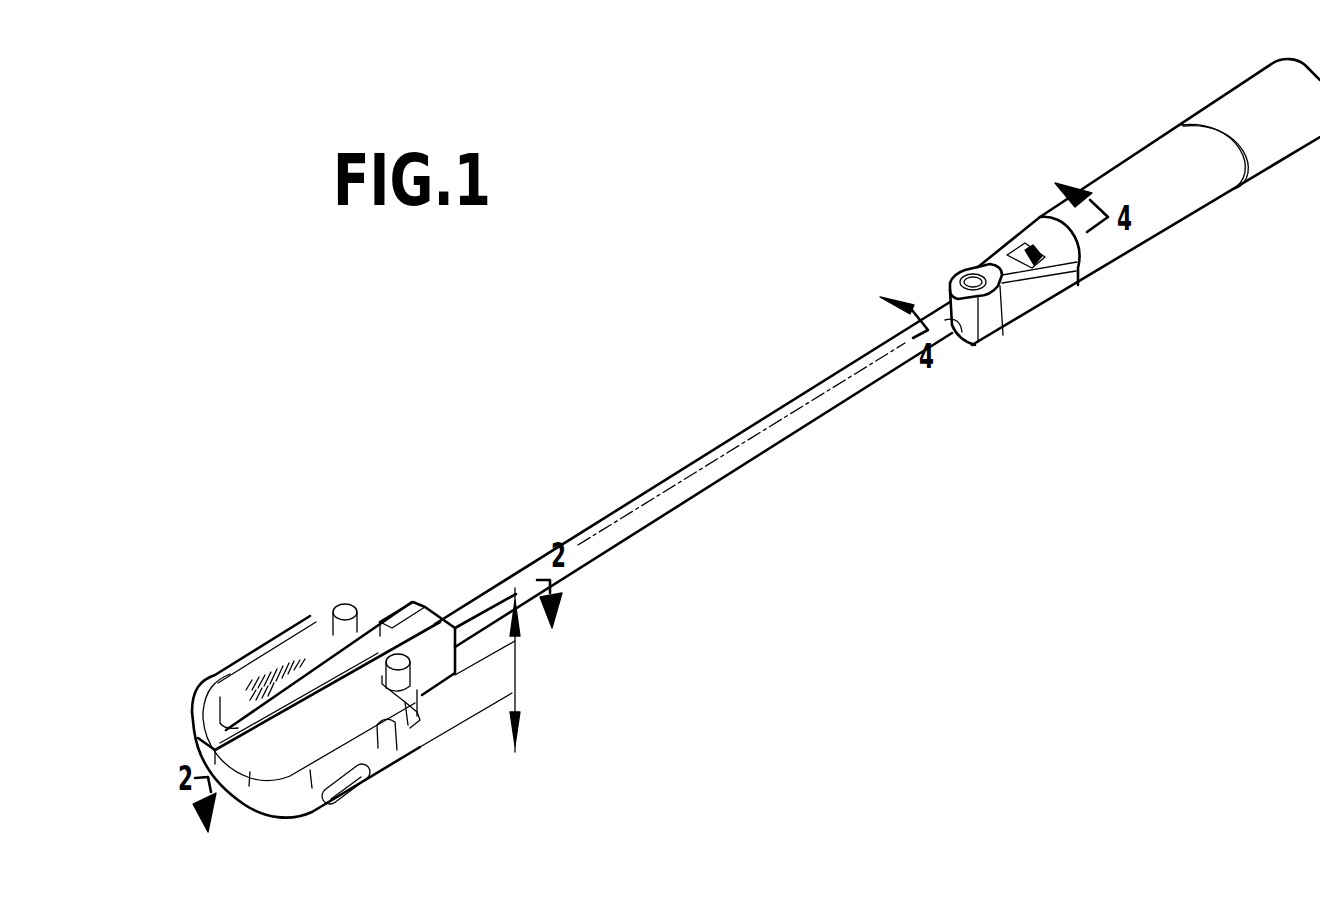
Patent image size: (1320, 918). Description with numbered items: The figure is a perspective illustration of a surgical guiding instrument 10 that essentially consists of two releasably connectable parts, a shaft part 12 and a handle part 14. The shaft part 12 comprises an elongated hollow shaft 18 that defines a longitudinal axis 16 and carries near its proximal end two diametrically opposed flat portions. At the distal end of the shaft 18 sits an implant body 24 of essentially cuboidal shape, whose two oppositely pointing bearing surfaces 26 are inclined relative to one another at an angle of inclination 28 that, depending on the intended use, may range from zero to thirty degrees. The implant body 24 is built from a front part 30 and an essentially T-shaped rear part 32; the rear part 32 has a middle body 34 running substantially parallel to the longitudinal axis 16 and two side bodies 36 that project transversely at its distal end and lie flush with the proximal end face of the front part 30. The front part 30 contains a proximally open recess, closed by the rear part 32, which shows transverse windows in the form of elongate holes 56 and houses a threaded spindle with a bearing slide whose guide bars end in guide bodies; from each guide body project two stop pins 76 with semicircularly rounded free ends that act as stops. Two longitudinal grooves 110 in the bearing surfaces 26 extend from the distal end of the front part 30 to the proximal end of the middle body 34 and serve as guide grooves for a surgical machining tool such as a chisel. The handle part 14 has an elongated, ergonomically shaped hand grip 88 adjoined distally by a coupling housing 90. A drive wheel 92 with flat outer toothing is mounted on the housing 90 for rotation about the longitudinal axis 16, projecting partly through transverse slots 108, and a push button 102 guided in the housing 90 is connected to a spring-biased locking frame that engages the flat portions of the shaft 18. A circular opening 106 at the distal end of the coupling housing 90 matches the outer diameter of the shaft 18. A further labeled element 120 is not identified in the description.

The surgical guiding instrument 10 is at (620, 372).
The shaft part 12 is at (510, 530).
The handle part 14 is at (1100, 118).
The longitudinal axis 16 is at (772, 420).
The elongated hollow shaft 18 is at (847, 373).
The implant body 24 is at (245, 632).
The bearing surfaces 26 is at (300, 650).
The angle of inclination 28 is at (513, 663).
The front part 30 is at (288, 816).
The rear part 32 is at (418, 703).
The middle body 34 is at (428, 680).
The side bodies 36 is at (392, 742).
The elongate holes 56 is at (352, 792).
The stop pins 76 is at (398, 656).
The hand grip 88 is at (1170, 125).
The coupling housing 90 is at (1017, 300).
The drive wheel 92 is at (1030, 240).
The push button 102 is at (975, 280).
The circular opening 106 is at (960, 333).
The transverse slots 108 is at (1047, 260).
The longitudinal grooves 110 is at (408, 598).
The recess 120 is at (226, 690).